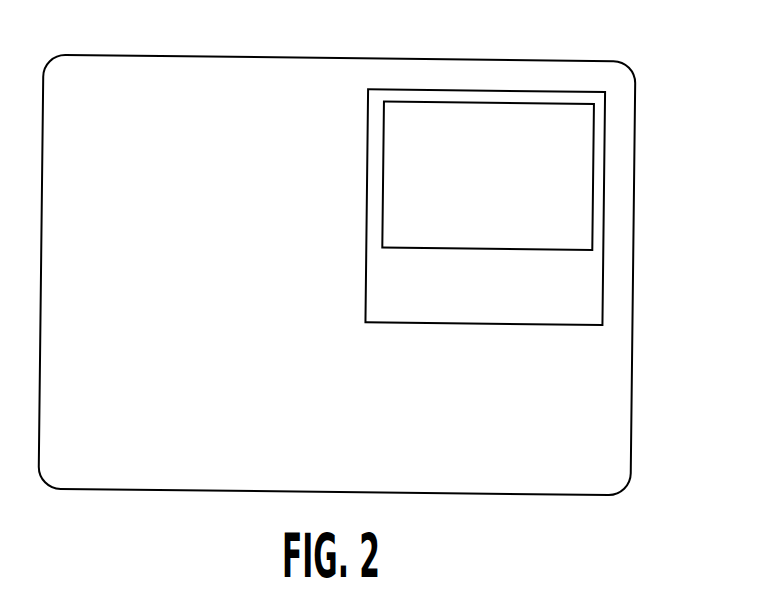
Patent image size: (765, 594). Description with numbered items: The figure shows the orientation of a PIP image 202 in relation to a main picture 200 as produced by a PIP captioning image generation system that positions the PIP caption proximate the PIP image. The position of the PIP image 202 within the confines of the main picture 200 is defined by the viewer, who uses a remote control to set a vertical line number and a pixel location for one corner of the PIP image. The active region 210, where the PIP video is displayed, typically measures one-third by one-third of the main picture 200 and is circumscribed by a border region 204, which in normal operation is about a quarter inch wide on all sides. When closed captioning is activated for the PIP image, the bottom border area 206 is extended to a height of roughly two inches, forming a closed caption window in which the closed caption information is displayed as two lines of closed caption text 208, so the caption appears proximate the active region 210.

The main picture 200 is at (163, 70).
The PIP image 202 is at (626, 206).
The border region 204 is at (538, 97).
The bottom border area 206 is at (372, 320).
The closed caption text 208 is at (540, 303).
The active region 210 is at (510, 182).